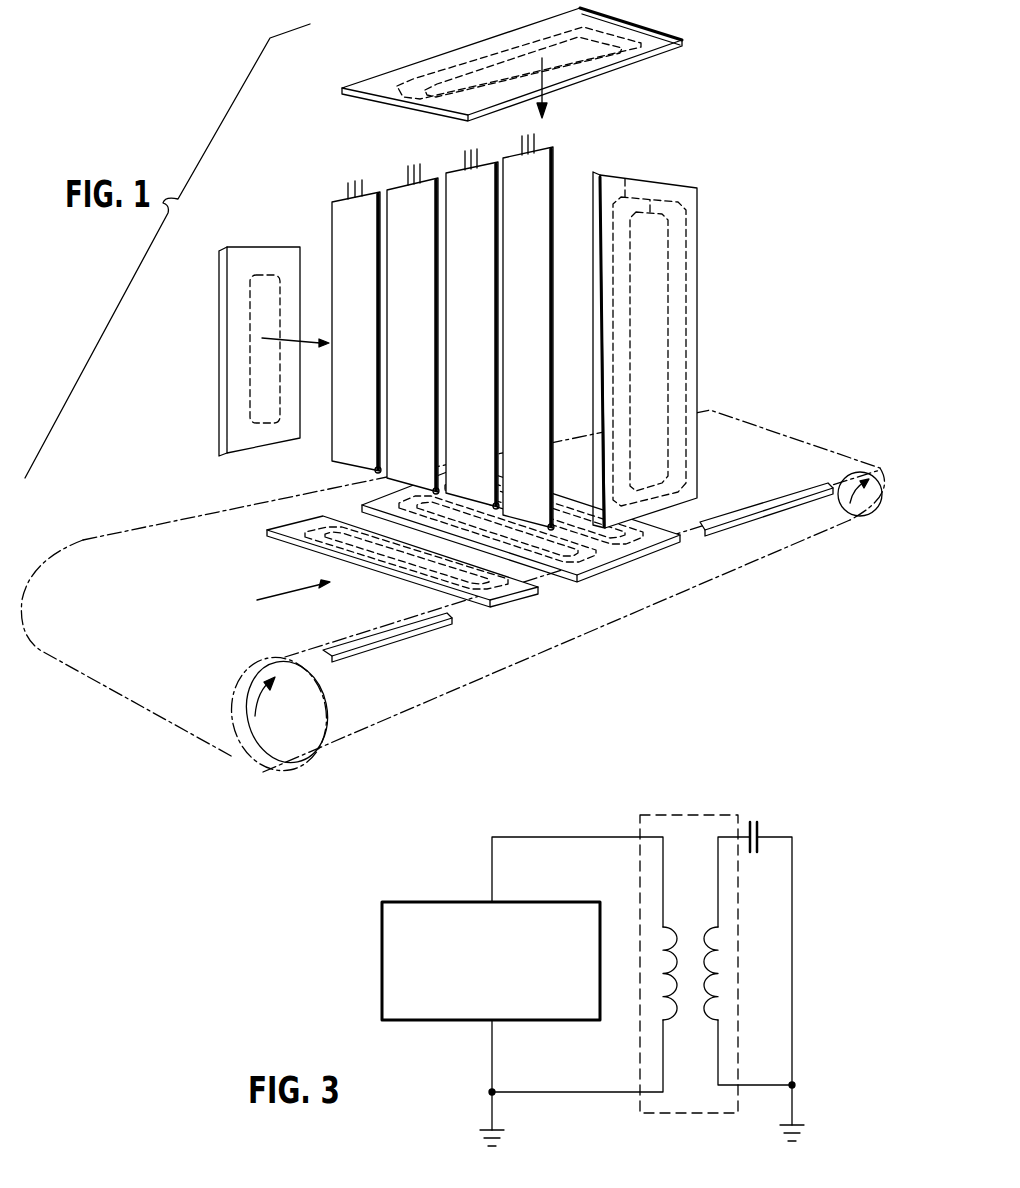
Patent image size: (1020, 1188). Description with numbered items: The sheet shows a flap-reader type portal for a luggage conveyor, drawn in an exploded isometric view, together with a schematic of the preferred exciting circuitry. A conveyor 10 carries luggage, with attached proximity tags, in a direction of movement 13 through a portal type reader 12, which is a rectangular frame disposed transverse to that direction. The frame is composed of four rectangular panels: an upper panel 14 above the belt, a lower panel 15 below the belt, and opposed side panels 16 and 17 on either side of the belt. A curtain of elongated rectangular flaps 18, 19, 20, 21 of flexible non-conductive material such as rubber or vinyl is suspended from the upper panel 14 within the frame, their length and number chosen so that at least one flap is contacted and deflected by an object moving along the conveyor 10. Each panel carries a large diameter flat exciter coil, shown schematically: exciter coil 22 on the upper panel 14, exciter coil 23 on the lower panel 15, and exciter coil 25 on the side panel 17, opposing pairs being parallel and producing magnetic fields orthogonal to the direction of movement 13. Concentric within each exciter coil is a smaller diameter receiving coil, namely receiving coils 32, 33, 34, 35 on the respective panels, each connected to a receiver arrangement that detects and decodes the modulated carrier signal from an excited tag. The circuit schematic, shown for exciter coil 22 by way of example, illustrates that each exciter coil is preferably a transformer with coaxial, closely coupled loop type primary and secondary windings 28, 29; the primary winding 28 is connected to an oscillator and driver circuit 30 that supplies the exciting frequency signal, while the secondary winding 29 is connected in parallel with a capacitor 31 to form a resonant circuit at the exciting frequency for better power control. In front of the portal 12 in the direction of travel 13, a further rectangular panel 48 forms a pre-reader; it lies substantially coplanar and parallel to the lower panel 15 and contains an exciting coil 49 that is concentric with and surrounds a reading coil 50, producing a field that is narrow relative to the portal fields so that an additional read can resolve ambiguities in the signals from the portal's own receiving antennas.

In FIG. 1, the conveyor 10 is at (422, 690).
In FIG. 1, the portal type reader 12 is at (479, 322).
In FIG. 1, the direction of movement 13 is at (293, 593).
In FIG. 1, the upper panel 14 is at (534, 64).
In FIG. 1, the lower panel 15 is at (521, 535).
In FIG. 1, the side panel 16 is at (247, 351).
In FIG. 1, the side panel 17 is at (680, 350).
In FIG. 1, the flap 18 is at (372, 377).
In FIG. 1, the flap 19 is at (425, 369).
In FIG. 1, the flap 20 is at (492, 422).
In FIG. 1, the flap 21 is at (543, 396).
In FIG. 1, the exciter coil 22 is at (437, 70).
In FIG. 3, the exciter coil 22 is at (689, 941).
In FIG. 1, the exciter coil 23 is at (550, 556).
In FIG. 1, the exciter coil 25 is at (686, 292).
In FIG. 3, the primary winding 28 is at (680, 935).
In FIG. 3, the secondary winding 29 is at (688, 1010).
In FIG. 3, the oscillator and driver circuit 30 is at (440, 912).
In FIG. 3, the capacitor 31 is at (760, 825).
In FIG. 1, the receiving coil 32 is at (590, 55).
In FIG. 1, the receiving coil 33 is at (583, 503).
In FIG. 1, the receiving coil 34 is at (250, 385).
In FIG. 1, the receiving coil 35 is at (670, 363).
In FIG. 1, the rectangular panel 48 is at (389, 549).
In FIG. 1, the exciting coil 49 is at (322, 548).
In FIG. 1, the reading coil 50 is at (330, 527).